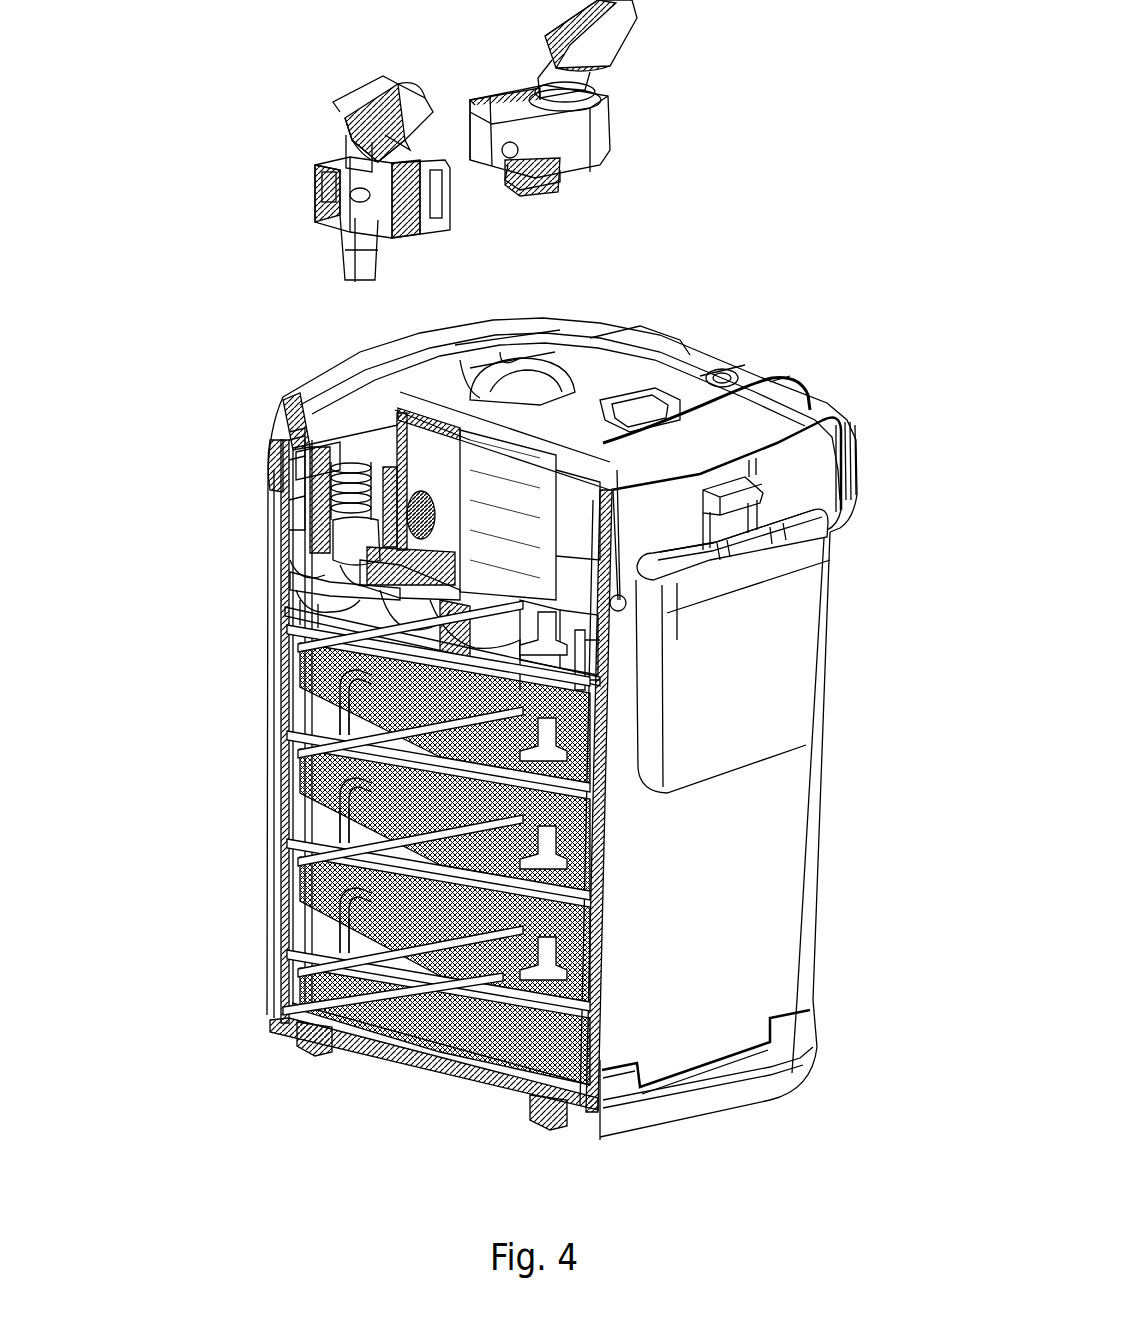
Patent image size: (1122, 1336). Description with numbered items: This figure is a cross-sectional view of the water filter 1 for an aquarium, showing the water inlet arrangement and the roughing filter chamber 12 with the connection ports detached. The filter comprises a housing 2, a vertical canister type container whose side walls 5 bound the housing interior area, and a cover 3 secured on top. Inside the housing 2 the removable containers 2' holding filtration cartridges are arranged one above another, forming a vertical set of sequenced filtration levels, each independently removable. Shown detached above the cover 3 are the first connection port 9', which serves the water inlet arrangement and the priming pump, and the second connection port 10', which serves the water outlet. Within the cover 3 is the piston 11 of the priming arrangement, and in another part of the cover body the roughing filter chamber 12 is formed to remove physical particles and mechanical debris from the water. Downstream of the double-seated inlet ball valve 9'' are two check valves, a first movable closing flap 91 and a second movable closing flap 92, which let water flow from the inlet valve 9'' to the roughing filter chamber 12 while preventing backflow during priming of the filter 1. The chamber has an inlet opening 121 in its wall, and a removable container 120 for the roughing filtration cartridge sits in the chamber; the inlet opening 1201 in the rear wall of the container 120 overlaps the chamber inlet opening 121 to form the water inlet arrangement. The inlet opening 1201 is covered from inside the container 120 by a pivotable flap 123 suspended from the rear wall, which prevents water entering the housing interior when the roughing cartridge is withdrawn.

The water filter 1 is at (283, 295).
The housing 2 is at (607, 809).
The removable containers 2' is at (339, 762).
The cover 3 is at (775, 327).
The side walls 5 is at (690, 972).
The first connection port 9' is at (399, 142).
The inlet valve 9'' is at (212, 459).
The second connection port 10' is at (607, 98).
The piston 11 is at (548, 372).
The roughing filter chamber 12 is at (612, 597).
The first movable closing flap 91 is at (330, 588).
The second movable closing flap 92 is at (335, 605).
The removable container 120 is at (300, 525).
The inlet opening 121 is at (372, 690).
The inlet opening 1201 is at (372, 690).
The pivotable flap 123 is at (585, 660).